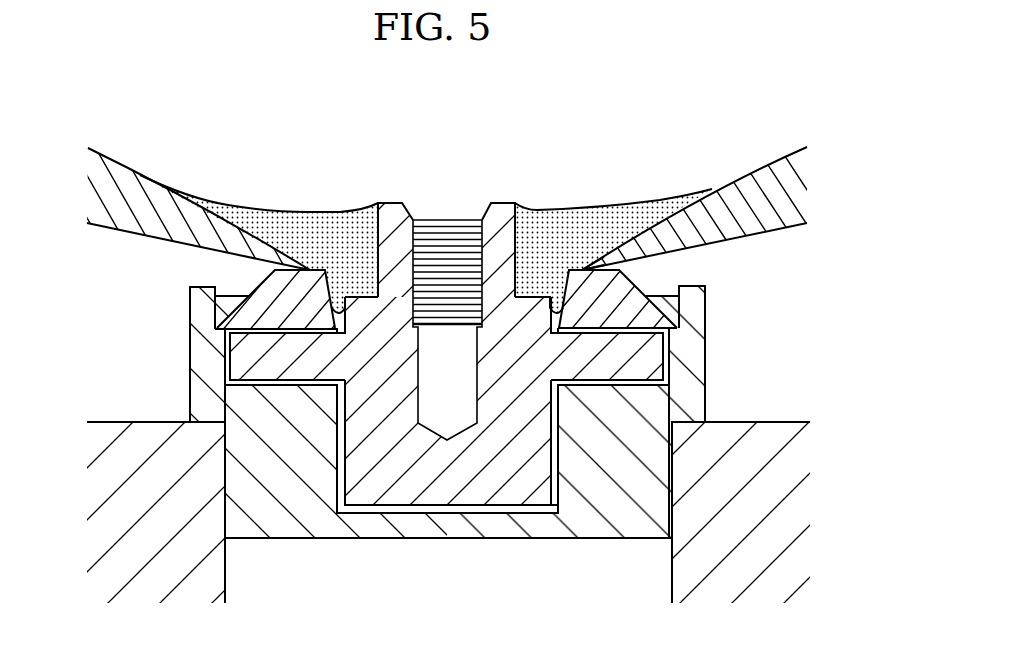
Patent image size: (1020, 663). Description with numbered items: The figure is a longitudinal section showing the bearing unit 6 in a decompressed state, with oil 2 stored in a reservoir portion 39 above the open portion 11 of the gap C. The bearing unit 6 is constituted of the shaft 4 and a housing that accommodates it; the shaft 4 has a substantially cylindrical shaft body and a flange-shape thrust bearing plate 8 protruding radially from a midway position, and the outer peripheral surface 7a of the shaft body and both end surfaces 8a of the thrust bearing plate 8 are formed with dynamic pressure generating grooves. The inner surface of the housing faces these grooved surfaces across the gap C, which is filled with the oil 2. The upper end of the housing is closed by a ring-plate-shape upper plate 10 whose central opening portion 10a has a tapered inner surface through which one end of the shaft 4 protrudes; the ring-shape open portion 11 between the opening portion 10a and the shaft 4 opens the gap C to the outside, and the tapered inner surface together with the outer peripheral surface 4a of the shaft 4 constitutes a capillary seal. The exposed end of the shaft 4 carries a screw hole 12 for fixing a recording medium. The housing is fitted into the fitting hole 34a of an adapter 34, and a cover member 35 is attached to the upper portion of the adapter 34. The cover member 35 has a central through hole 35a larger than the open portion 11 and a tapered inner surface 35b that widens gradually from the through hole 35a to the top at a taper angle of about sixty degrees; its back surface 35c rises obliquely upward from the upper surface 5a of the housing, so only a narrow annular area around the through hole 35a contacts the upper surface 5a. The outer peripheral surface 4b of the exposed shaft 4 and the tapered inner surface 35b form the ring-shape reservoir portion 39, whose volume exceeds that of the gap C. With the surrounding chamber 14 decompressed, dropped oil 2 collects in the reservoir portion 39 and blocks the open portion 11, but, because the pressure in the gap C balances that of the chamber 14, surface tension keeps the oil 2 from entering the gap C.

The oil 2 is at (251, 204).
The shaft 4 is at (446, 359).
The outer peripheral surface of the shaft 4a is at (346, 334).
The outer peripheral surface of the exposed shaft 4b is at (537, 207).
The upper surface of the housing 5a is at (322, 270).
The bearing unit 6 is at (716, 328).
The outer peripheral surface of the shaft body 7a is at (552, 484).
The thrust bearing plate 8 is at (434, 444).
The end surfaces of the thrust bearing plate 8a is at (250, 331).
The upper plate 10 is at (263, 281).
The opening portion 10a is at (566, 270).
The open portion 11 is at (550, 287).
The screw hole 12 is at (430, 219).
The chamber 14 is at (697, 124).
The adapter 34 is at (464, 500).
The fitting hole 34a is at (672, 583).
The cover member 35 is at (671, 205).
The through hole 35a is at (583, 268).
The tapered inner surface 35b is at (661, 224).
The back surface 35c is at (757, 235).
The reservoir portion 39 is at (228, 208).
The gap C is at (340, 488).